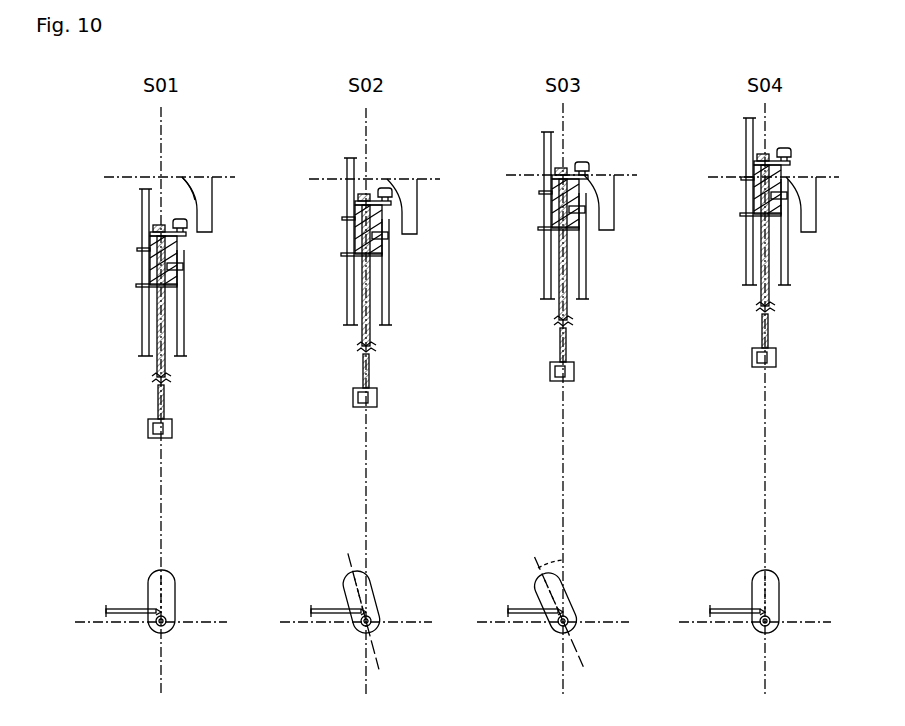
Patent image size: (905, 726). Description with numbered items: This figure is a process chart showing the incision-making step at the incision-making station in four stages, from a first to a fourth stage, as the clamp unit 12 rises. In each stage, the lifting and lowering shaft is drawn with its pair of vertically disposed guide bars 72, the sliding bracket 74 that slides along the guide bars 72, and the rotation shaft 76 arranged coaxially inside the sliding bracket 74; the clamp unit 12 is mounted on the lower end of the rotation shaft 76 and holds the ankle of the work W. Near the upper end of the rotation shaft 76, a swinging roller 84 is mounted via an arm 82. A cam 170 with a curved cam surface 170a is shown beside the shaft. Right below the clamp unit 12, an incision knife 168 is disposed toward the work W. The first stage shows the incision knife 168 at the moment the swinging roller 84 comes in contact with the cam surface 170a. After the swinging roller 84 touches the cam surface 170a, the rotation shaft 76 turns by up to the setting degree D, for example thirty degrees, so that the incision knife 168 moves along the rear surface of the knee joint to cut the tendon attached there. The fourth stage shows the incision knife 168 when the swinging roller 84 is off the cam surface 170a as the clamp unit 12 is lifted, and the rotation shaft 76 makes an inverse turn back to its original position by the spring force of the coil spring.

The guide bars 72 is at (140, 209).
The sliding bracket 74 is at (137, 249).
The rotation shaft 76 is at (167, 382).
The arm 82 is at (182, 263).
The swinging roller 84 is at (190, 236).
The clamp unit 12 is at (173, 427).
The cam 170 is at (214, 212).
The curved cam surface 170a is at (178, 177).
The incision knife 168 is at (113, 608).
The work W is at (170, 573).
The setting degree D is at (550, 557).